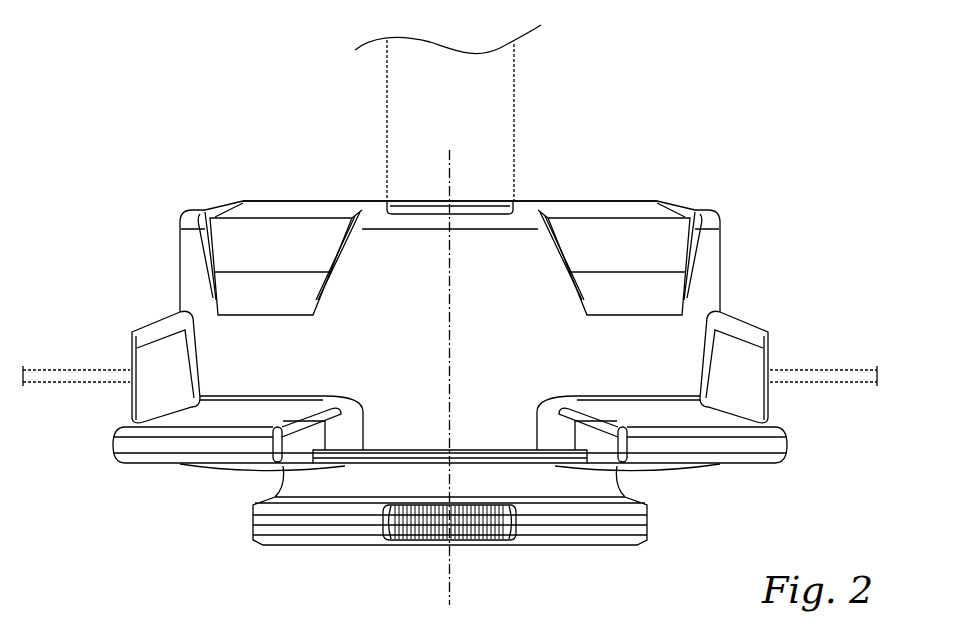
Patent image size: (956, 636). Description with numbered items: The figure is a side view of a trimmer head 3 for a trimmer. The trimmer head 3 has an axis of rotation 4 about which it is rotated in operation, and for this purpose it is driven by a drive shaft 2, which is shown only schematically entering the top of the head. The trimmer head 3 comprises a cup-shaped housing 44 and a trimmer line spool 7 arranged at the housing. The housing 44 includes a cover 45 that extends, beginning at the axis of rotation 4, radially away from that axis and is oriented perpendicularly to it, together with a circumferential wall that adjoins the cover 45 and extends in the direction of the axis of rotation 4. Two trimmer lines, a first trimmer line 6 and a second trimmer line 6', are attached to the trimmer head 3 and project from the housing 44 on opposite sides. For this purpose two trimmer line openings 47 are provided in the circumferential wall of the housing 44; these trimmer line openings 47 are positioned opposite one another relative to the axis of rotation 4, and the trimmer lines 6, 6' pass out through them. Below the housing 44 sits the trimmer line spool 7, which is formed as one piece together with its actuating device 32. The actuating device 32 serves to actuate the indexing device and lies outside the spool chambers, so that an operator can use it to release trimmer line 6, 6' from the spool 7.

The drive shaft 2 is at (515, 69).
The trimmer head 3 is at (752, 160).
The axis of rotation 4 is at (449, 172).
The first trimmer line 6 is at (823, 355).
The second trimmer line 6' is at (76, 356).
The trimmer line spool 7 is at (272, 548).
The actuating device 32 is at (594, 547).
The housing 44 is at (181, 252).
The cover 45 is at (538, 198).
The trimmer line openings 47 is at (130, 370).